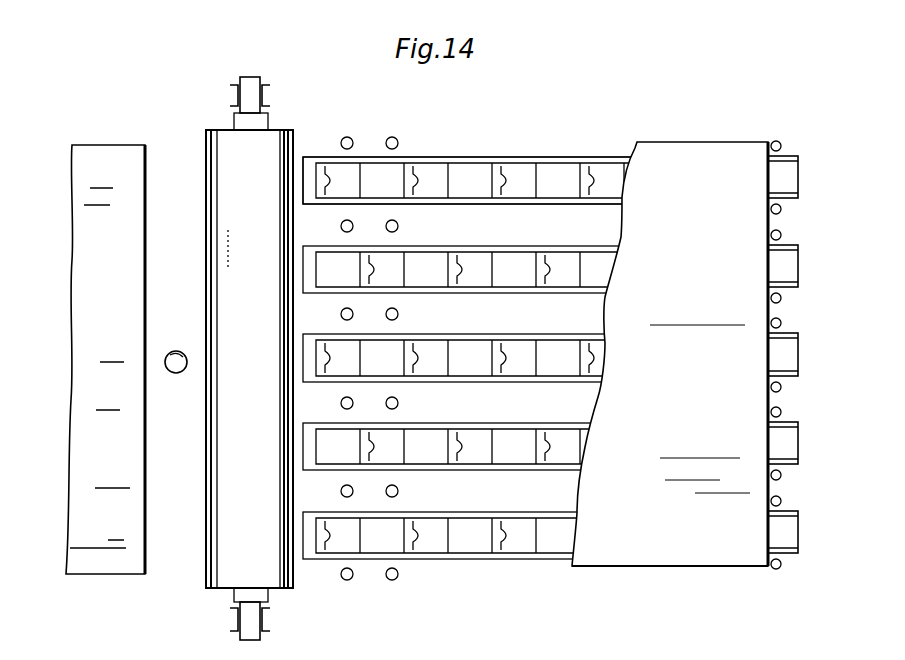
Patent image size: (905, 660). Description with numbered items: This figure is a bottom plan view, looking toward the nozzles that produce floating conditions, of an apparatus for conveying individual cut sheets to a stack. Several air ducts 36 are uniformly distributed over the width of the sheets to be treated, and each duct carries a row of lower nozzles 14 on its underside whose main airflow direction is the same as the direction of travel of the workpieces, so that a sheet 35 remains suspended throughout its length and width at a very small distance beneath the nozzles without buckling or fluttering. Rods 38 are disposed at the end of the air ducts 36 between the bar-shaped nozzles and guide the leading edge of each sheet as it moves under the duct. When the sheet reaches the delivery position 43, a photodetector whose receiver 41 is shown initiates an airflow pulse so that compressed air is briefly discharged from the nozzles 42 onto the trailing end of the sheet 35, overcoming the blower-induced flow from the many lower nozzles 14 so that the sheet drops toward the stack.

The lower nozzles 14 is at (429, 172).
The sheet 35 is at (103, 152).
The air duct 36 is at (484, 157).
The rods 38 is at (774, 140).
The receiver 41 is at (176, 349).
The nozzles 42 is at (347, 136).
The delivery position 43 is at (683, 160).